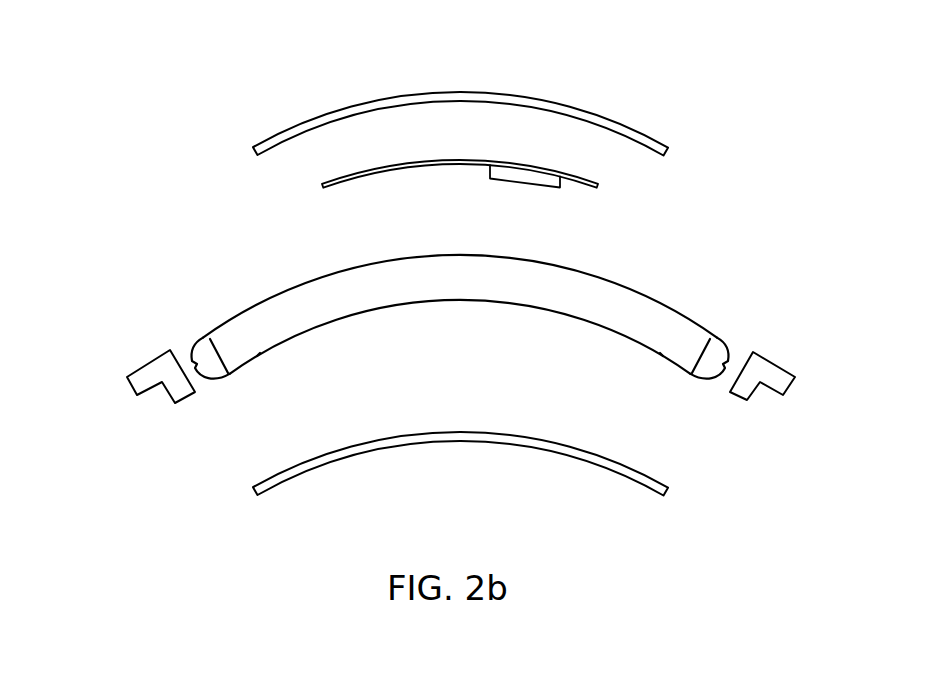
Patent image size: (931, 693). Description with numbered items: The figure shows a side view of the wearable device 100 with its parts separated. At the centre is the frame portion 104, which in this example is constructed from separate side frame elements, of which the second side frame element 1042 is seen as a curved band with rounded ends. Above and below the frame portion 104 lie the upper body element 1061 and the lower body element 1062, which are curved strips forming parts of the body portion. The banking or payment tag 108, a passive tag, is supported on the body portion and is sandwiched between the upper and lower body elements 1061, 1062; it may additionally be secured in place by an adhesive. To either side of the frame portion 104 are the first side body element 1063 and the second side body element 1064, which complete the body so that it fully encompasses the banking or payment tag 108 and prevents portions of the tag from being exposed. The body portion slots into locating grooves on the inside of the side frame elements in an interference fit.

The wearable device 100 is at (160, 144).
The frame portion 104 is at (180, 307).
The second side frame element 1042 is at (675, 305).
The upper body element 1061 is at (458, 92).
The lower body element 1062 is at (438, 442).
The first side body element 1063 is at (137, 393).
The second side body element 1064 is at (748, 400).
The banking or payment tag 108 is at (320, 185).